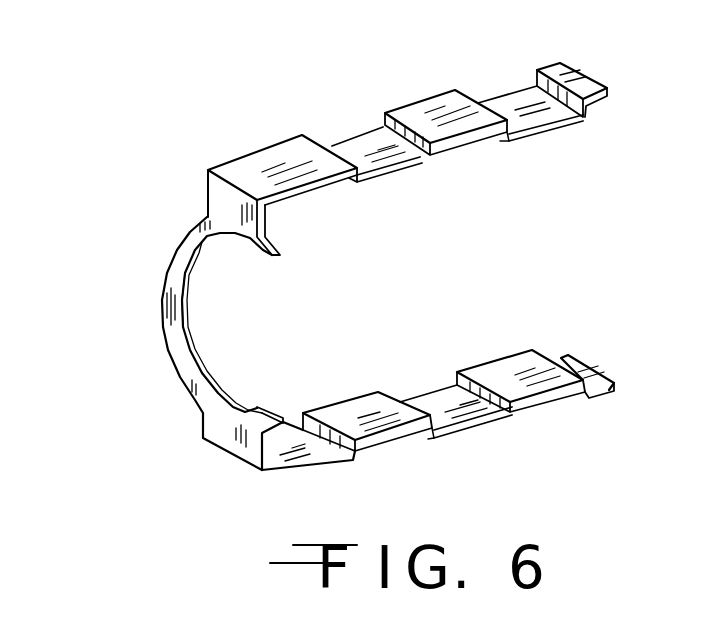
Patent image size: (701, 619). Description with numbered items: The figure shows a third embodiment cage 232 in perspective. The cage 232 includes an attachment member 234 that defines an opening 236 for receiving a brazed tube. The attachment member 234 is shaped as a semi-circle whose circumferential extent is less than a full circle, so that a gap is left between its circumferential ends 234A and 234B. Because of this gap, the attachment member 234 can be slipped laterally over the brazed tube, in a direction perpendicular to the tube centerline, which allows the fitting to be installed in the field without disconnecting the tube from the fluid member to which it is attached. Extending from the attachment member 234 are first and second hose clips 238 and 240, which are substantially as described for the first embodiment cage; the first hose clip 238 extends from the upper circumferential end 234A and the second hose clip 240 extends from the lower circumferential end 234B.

The third embodiment cage 232 is at (219, 173).
The attachment member 234 is at (165, 317).
The circumferential end 234A is at (262, 250).
The circumferential end 234B is at (276, 417).
The opening 236 is at (220, 333).
The first hose clip 238 is at (283, 150).
The second hose clip 240 is at (296, 473).